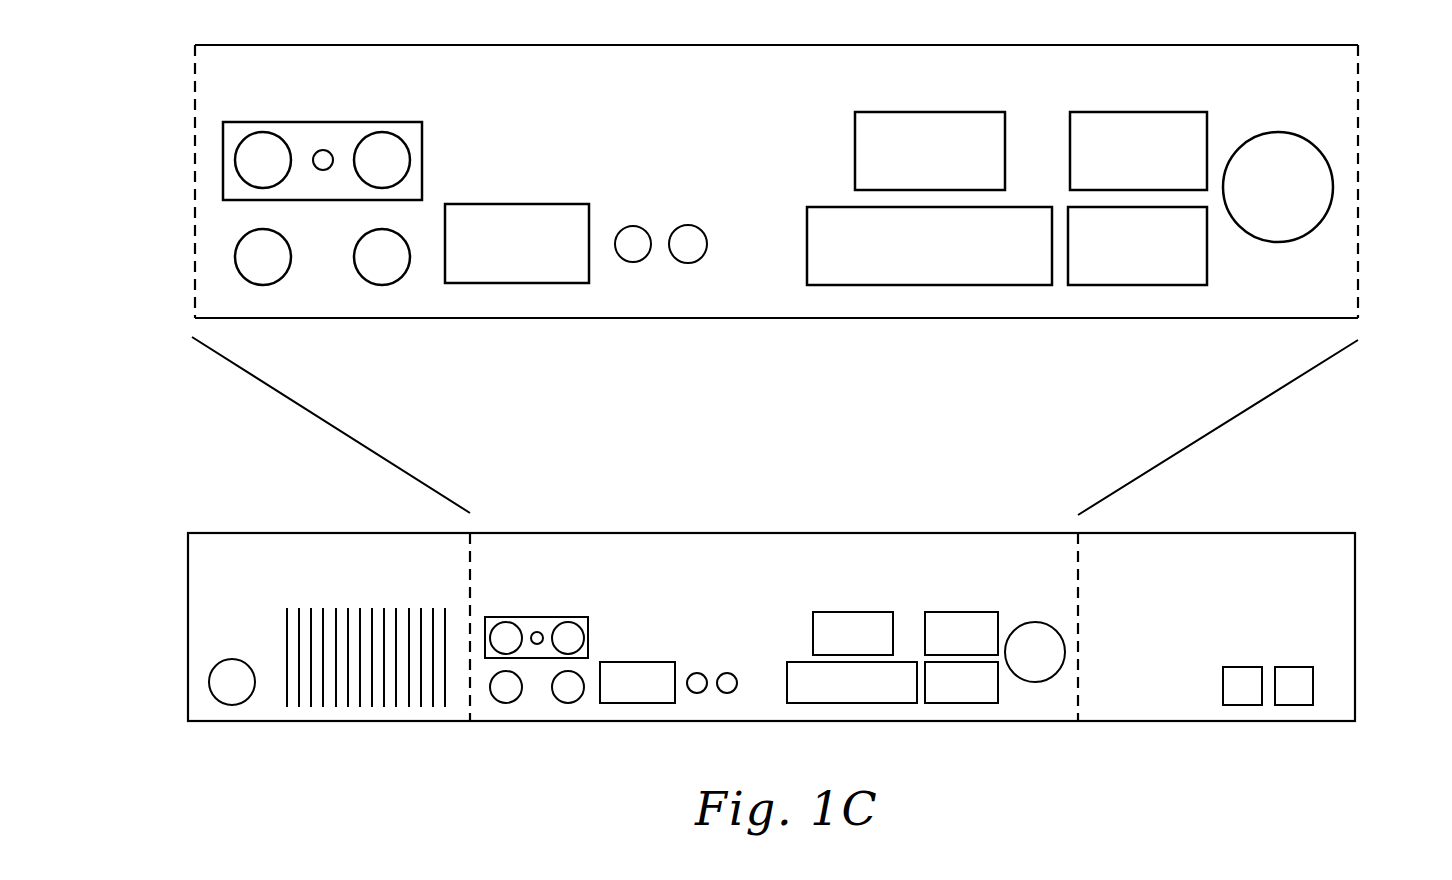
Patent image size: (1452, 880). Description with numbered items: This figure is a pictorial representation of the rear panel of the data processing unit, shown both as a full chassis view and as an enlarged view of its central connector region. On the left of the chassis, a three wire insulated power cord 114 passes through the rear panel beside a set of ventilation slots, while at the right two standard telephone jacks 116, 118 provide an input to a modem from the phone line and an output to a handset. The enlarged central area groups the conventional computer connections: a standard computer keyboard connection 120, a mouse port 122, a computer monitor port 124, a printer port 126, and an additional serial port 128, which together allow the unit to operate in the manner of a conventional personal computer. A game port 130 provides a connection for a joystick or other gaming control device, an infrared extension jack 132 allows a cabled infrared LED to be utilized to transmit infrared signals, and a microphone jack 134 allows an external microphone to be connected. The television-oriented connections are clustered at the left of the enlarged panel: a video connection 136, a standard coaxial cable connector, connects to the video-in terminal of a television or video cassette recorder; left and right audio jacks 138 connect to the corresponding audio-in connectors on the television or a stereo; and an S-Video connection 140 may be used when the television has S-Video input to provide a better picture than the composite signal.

The power cord 114 is at (209, 683).
The telephone jack 116 is at (1242, 667).
The telephone jack 118 is at (1296, 667).
The computer keyboard connection 120 is at (1333, 185).
The mouse port 122 is at (1173, 112).
The computer monitor port 124 is at (970, 112).
The printer port 126 is at (860, 285).
The additional serial port 128 is at (1120, 285).
The game port 130 is at (553, 204).
The infrared extension jack 132 is at (636, 226).
The microphone jack 134 is at (707, 248).
The video connection 136 is at (410, 160).
The left and right audio jacks 138 is at (243, 180).
The S-Video connection 140 is at (360, 236).